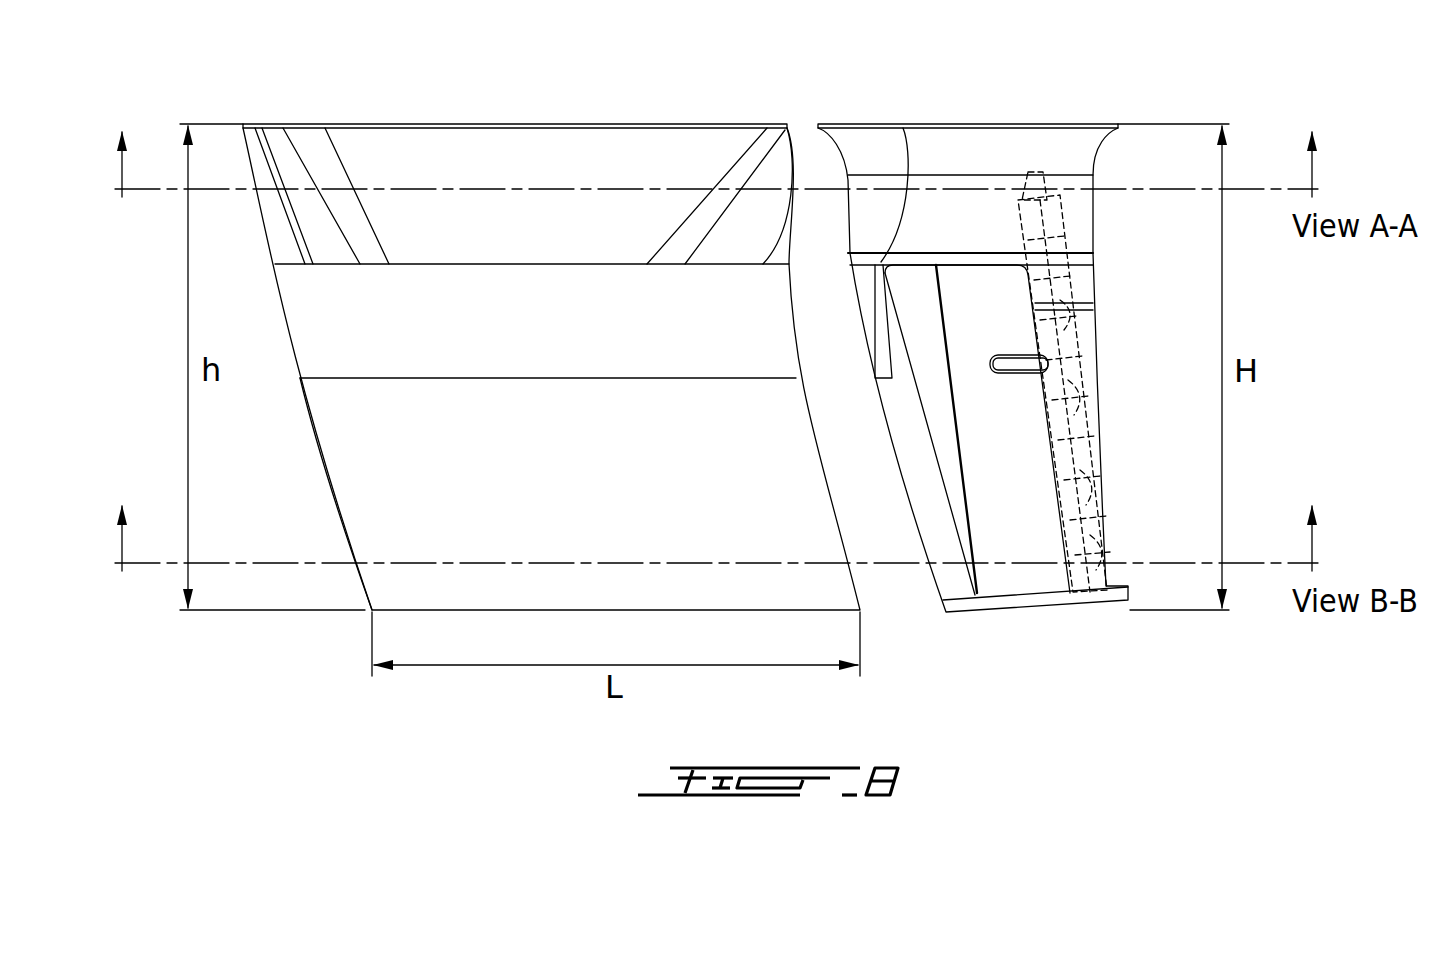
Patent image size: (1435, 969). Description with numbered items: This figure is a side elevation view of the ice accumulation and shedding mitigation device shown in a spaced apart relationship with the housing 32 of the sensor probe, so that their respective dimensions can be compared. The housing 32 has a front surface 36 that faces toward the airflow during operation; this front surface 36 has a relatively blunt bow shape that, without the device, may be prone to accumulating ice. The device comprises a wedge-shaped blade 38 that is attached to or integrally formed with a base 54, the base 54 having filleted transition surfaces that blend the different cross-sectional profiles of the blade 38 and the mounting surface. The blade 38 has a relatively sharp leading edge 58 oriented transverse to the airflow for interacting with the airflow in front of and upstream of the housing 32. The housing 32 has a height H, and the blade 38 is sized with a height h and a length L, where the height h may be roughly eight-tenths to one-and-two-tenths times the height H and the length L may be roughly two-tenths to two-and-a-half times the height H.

The housing 32 is at (990, 150).
The front surface 36 is at (870, 332).
The blade 38 is at (521, 632).
The base 54 is at (325, 242).
The leading edge 58 is at (327, 465).